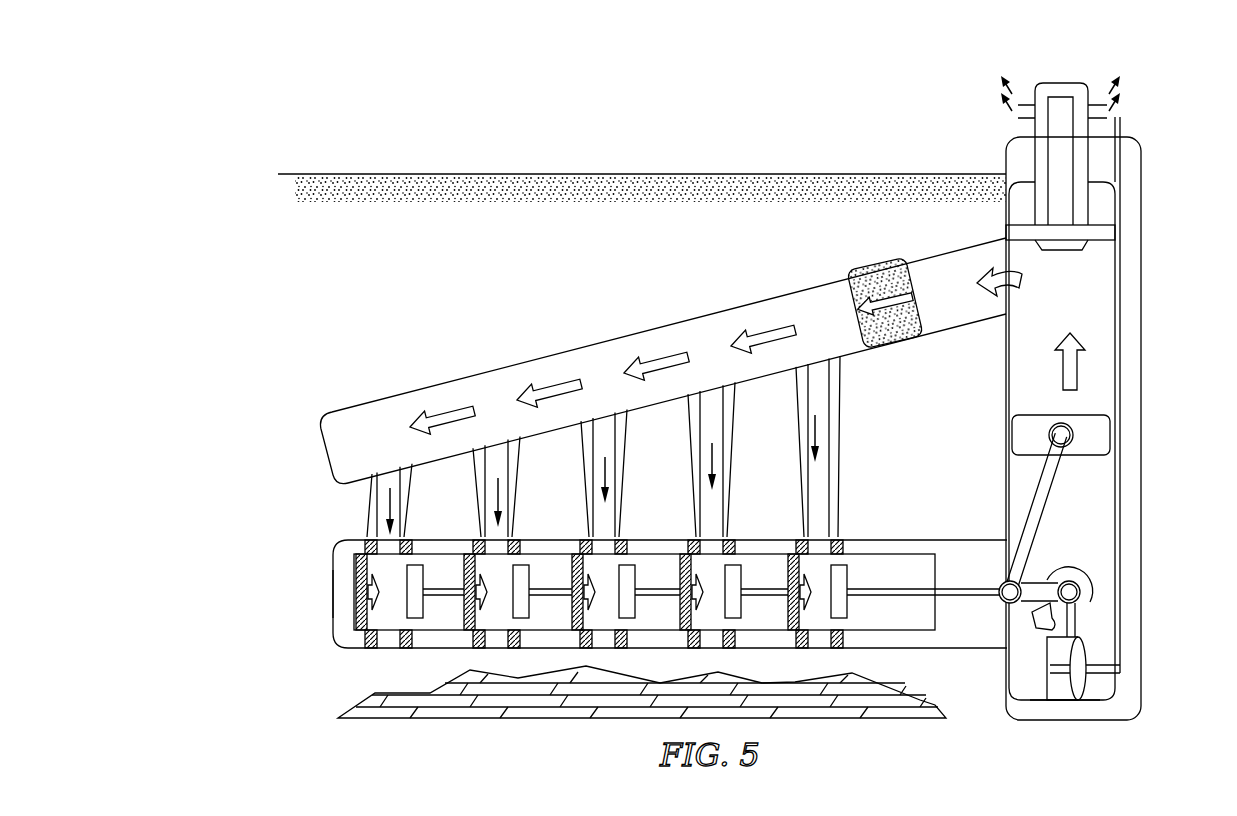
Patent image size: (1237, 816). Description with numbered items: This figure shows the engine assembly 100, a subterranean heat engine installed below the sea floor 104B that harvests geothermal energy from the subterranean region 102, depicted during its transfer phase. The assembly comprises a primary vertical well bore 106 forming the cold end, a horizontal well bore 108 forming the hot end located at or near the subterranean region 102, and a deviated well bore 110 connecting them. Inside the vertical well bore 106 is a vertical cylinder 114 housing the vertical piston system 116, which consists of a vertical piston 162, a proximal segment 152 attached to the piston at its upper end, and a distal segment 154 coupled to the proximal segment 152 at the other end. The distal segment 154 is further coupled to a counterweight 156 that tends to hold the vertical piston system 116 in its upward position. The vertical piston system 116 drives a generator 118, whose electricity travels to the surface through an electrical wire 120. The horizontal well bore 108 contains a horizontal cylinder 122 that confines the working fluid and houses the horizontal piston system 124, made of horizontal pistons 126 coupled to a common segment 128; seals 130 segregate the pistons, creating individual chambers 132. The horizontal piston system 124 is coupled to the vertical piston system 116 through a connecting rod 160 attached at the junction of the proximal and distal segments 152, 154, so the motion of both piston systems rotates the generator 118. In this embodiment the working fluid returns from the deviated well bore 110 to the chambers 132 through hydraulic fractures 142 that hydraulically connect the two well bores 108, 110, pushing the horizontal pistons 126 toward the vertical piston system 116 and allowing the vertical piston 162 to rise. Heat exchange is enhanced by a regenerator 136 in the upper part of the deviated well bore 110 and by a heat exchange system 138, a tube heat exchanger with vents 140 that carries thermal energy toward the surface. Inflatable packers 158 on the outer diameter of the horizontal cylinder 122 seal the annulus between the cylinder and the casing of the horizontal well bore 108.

The engine assembly 100 is at (950, 61).
The subterranean region 102 is at (885, 718).
The sea floor 104B is at (278, 175).
The primary vertical well bore 106 is at (1143, 445).
The horizontal well bore 108 is at (332, 568).
The deviated well bore 110 is at (320, 450).
The vertical cylinder 114 is at (1127, 697).
The vertical piston system 116 is at (1098, 488).
The generator 118 is at (1053, 673).
The electrical wire 120 is at (1120, 527).
The horizontal cylinder 122 is at (925, 553).
The horizontal piston system 124 is at (338, 611).
The horizontal piston 126 is at (423, 577).
The common segment 128 is at (498, 596).
The seal 130 is at (354, 580).
The chamber 132 is at (410, 648).
The regenerator 136 is at (898, 352).
The heat exchange system 138 is at (1063, 162).
The vent 140 is at (1021, 103).
The hydraulic fracture 142 is at (412, 500).
The proximal segment 152 is at (1035, 492).
The distal segment 154 is at (1032, 601).
The counterweight 156 is at (1087, 612).
The inflatable packer 158 is at (363, 540).
The connecting rod 160 is at (938, 595).
The vertical piston 162 is at (1012, 433).